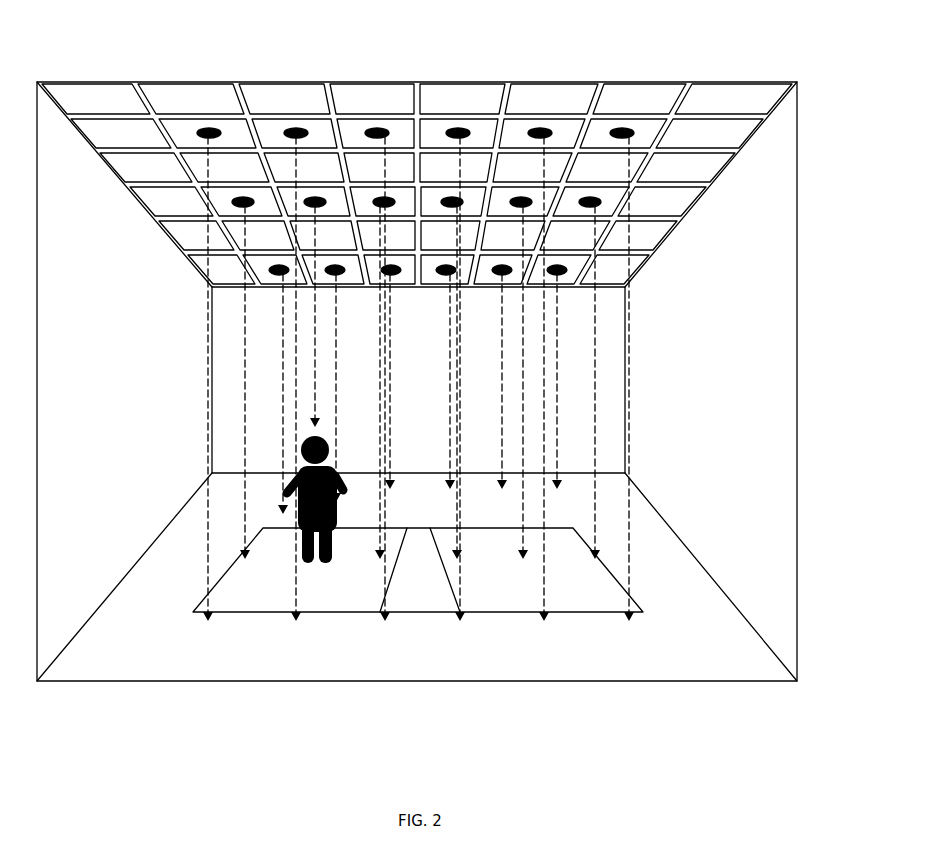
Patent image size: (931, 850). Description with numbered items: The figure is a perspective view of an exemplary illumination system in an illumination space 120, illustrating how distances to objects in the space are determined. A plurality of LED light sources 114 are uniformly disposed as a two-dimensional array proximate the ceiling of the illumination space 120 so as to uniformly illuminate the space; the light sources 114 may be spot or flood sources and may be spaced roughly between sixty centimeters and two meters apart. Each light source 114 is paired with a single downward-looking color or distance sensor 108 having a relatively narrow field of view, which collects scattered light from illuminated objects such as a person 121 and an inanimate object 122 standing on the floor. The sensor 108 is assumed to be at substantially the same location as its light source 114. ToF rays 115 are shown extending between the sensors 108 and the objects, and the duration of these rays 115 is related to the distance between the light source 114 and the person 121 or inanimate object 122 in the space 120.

The sensor 108 is at (624, 133).
The LED light source 114 is at (603, 127).
The ToF ray 115 is at (630, 546).
The illumination space 120 is at (673, 661).
The person 121 is at (325, 563).
The inanimate object 122 is at (513, 598).